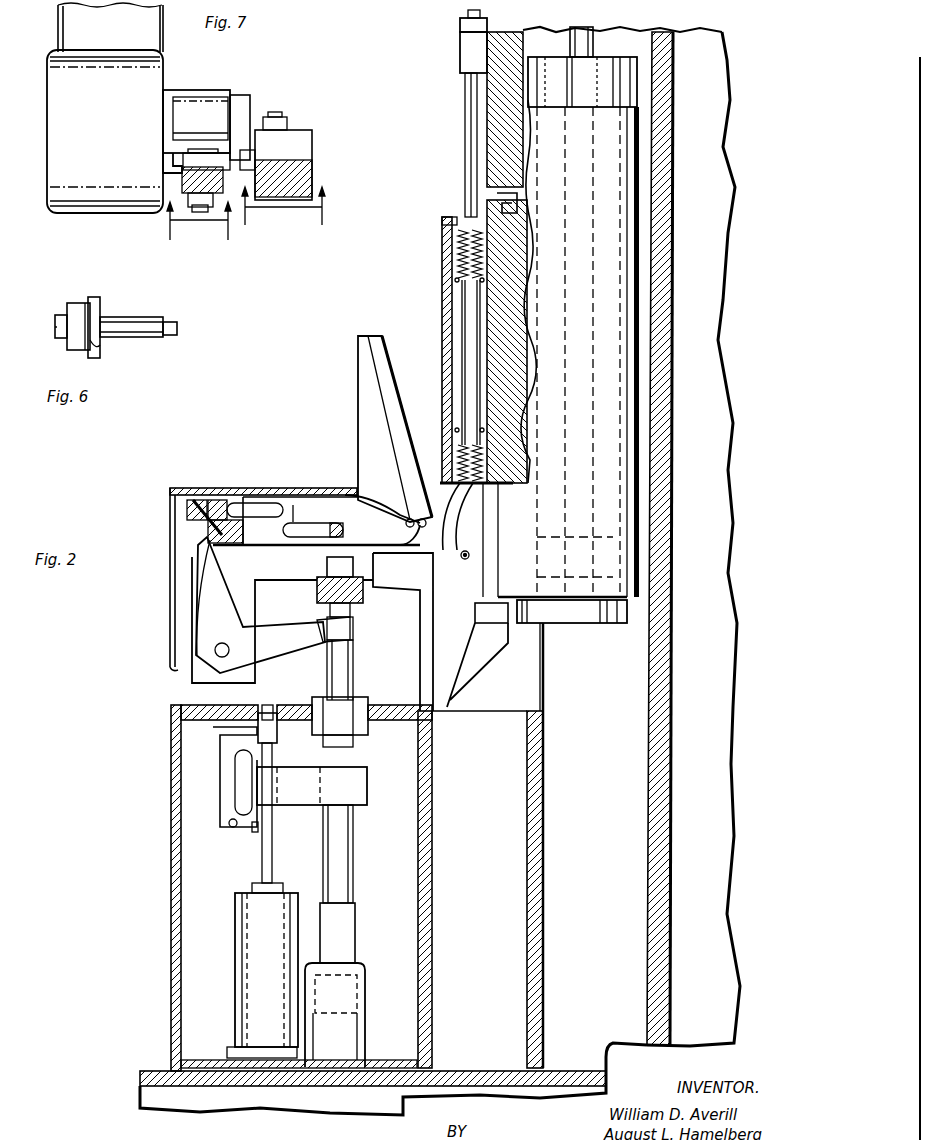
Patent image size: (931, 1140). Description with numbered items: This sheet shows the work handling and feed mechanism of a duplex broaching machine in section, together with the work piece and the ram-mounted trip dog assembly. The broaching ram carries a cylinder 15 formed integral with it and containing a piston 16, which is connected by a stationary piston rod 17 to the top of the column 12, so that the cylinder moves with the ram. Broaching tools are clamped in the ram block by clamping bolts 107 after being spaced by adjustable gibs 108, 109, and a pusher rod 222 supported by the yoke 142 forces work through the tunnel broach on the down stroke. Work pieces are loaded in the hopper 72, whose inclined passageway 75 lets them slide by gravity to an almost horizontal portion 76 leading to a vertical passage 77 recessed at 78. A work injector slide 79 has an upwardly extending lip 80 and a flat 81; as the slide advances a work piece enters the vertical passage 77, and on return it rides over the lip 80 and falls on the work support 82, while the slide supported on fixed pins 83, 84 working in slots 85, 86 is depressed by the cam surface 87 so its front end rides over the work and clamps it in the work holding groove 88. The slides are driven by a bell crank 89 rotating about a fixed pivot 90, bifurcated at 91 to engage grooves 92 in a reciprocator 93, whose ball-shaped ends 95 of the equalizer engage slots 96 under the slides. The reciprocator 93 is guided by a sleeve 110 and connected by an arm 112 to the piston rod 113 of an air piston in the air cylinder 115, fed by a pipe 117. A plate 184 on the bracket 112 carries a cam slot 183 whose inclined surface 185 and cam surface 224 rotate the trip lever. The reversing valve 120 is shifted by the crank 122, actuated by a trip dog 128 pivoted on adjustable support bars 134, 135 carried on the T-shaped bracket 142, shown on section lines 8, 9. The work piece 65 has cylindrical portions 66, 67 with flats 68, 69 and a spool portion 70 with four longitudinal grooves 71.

In FIG. 2, the column 12 is at (675, 122).
In FIG. 2, the cylinder 15 is at (640, 250).
In FIG. 2, the piston 16 is at (600, 546).
In FIG. 2, the piston rod 17 is at (582, 34).
In FIG. 2, the T-shaped bracket 142 is at (498, 92).
In FIG. 2, the pusher rod 222 is at (470, 118).
In FIG. 2, the adjustable gib 108 is at (447, 230).
In FIG. 2, the adjustable gib 109 is at (513, 220).
In FIG. 2, the clamping bolts 107 is at (455, 280).
In FIG. 2, the right hand hopper 72 is at (384, 340).
In FIG. 2, the hopper passageway 75 is at (368, 375).
In FIG. 2, the horizontal portion 76 is at (413, 493).
In FIG. 2, the recess 78 is at (433, 508).
In FIG. 2, the vertical passage 77 is at (430, 533).
In FIG. 2, the slot 86 is at (250, 500).
In FIG. 2, the slot 85 is at (293, 520).
In FIG. 2, the pin 84 is at (277, 508).
In FIG. 2, the work injector slide 79 is at (307, 513).
In FIG. 2, the flat 81 is at (347, 497).
In FIG. 2, the slots 96 is at (187, 527).
In FIG. 2, the ball-shaped ends 95 is at (210, 550).
In FIG. 2, the bell crank 89 is at (205, 597).
In FIG. 2, the fixed pivot 90 is at (217, 644).
In FIG. 2, the cam surface 87 is at (248, 545).
In FIG. 2, the pin 83 is at (323, 537).
In FIG. 2, the bifurcated arm 91 is at (327, 622).
In FIG. 2, the grooves 92 is at (352, 625).
In FIG. 2, the reciprocator 93 is at (347, 667).
In FIG. 2, the lip 80 is at (410, 537).
In FIG. 2, the work holding groove 88 is at (465, 560).
In FIG. 2, the work support 82 is at (477, 599).
In FIG. 2, the sleeve 110 is at (372, 703).
In FIG. 2, the plate 184 is at (223, 748).
In FIG. 2, the inclined surface 185 is at (228, 768).
In FIG. 2, the cam slot 183 is at (228, 790).
In FIG. 2, the arm 112 is at (292, 807).
In FIG. 2, the cam surface 224 is at (252, 832).
In FIG. 2, the piston rod 113 is at (258, 868).
In FIG. 2, the air cylinder 115 is at (235, 941).
In FIG. 2, the pipe 117 is at (350, 990).
In FIG. 7, the reversing valve 120 is at (100, 192).
In FIG. 7, the crank 122 is at (250, 113).
In FIG. 7, the trip dog 128 is at (200, 163).
In FIG. 7, the adjustable support bar 134 is at (183, 180).
In FIG. 7, the adjustable support bar 135 is at (300, 150).
In FIG. 7, the section line 8- 8 is at (197, 230).
In FIG. 7, the section line 9- 9 is at (284, 213).
In FIG. 6, the work piece 65 is at (177, 330).
In FIG. 6, the cylindrical portion 66 is at (138, 325).
In FIG. 6, the cylindrical portion 67 is at (78, 317).
In FIG. 6, the flat 68 is at (165, 321).
In FIG. 6, the flat 69 is at (72, 340).
In FIG. 6, the spool portion 70 is at (100, 305).
In FIG. 6, the longitudinal grooves 71 is at (98, 346).